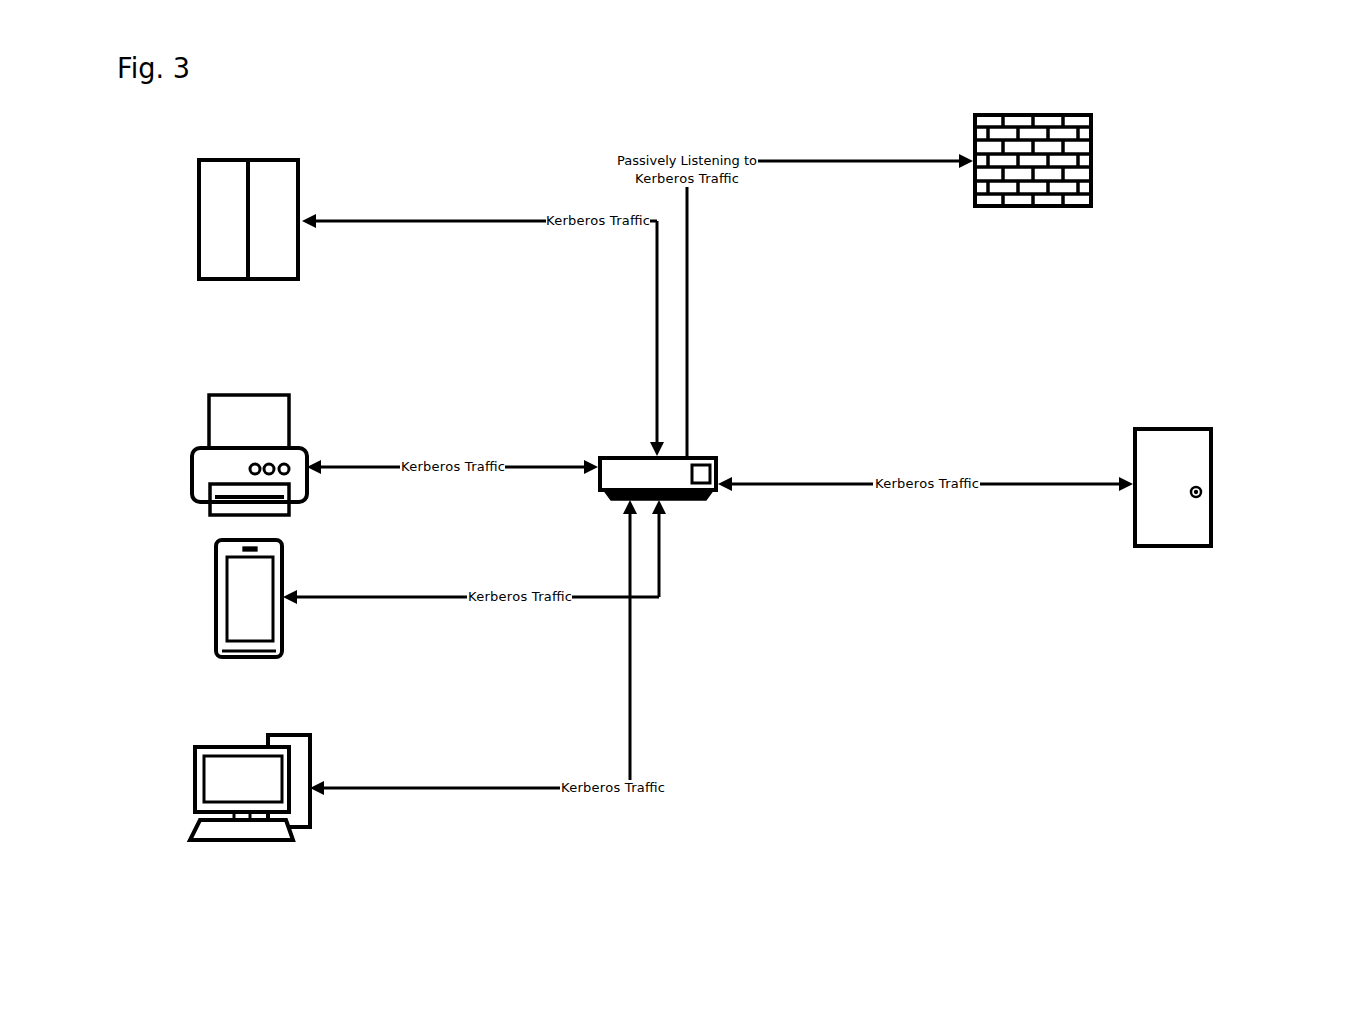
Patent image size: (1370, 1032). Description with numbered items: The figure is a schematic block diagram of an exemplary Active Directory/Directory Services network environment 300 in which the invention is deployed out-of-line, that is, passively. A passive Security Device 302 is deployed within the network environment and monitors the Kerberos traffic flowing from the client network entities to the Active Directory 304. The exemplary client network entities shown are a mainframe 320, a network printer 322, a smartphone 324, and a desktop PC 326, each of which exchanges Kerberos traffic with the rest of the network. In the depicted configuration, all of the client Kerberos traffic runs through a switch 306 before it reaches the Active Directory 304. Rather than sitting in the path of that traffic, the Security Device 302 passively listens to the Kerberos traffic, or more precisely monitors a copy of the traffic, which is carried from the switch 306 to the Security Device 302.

The AD/DS network environment 300 is at (978, 727).
The Security Device 302 is at (1093, 158).
The Active Directory 304 is at (1215, 467).
The switch 306 is at (706, 450).
The mainframe 320 is at (197, 195).
The network printer 322 is at (192, 450).
The smartphone 324 is at (216, 622).
The desktop PC 326 is at (190, 827).